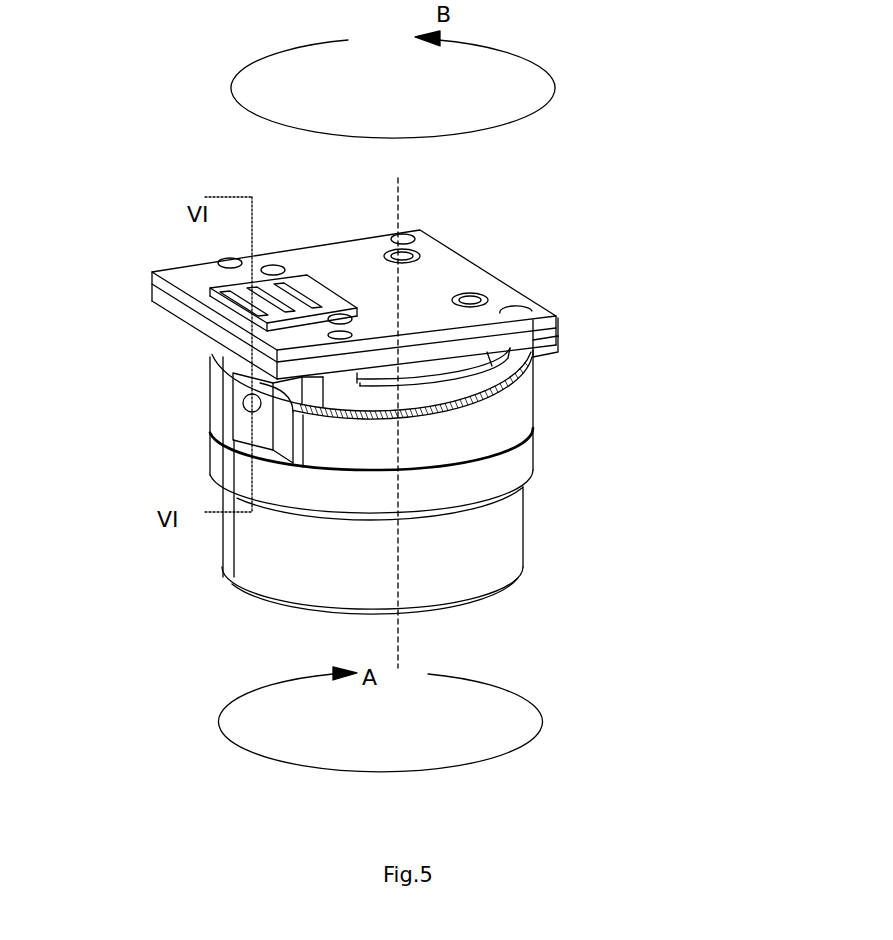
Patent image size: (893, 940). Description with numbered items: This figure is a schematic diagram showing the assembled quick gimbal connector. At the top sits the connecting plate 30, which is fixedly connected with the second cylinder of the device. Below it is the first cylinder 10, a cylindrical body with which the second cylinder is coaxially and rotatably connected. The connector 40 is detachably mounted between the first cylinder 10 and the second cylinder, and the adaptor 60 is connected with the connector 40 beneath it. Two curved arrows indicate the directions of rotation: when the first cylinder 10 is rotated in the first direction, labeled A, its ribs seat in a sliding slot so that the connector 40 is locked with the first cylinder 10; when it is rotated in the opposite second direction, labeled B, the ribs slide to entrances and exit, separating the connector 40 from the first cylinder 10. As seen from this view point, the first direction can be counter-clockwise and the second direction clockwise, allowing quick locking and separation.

The first cylinder 10 is at (227, 413).
The connecting plate 30 is at (430, 275).
The connector 40 is at (478, 470).
The adaptor 60 is at (482, 565).